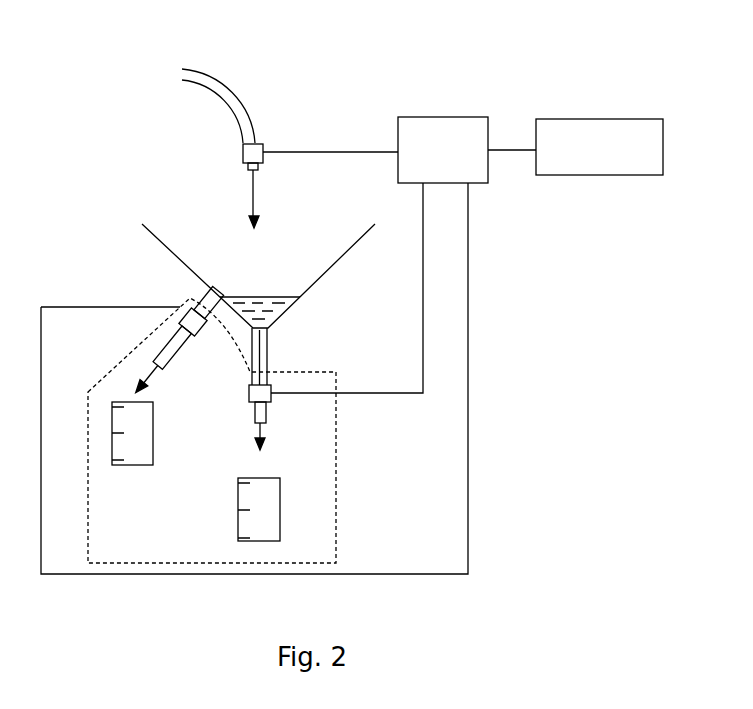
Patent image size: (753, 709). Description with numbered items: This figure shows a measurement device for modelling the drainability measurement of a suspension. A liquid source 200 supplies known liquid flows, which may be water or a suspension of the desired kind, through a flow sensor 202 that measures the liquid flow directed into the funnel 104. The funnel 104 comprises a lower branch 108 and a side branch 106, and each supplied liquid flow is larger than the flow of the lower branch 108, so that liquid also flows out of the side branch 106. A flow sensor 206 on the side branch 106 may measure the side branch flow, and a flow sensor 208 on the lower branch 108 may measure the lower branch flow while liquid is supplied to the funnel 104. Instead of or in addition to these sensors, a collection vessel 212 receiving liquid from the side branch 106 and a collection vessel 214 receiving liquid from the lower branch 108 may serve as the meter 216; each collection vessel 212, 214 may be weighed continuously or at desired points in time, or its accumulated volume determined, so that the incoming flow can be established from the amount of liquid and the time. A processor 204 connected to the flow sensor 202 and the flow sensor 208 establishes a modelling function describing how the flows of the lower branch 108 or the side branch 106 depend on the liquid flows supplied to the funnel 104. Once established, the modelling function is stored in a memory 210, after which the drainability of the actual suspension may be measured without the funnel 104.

The liquid source 200 is at (221, 80).
The flow sensor 202 is at (243, 153).
The processor 204 is at (431, 117).
The memory 210 is at (584, 119).
The funnel 104 is at (360, 242).
The side branch 106 is at (200, 297).
The lower branch 108 is at (267, 366).
The flow sensor 206 is at (180, 317).
The flow sensor 208 is at (249, 396).
The collection vessel 212 is at (153, 431).
The collection vessel 214 is at (280, 497).
The meter 216 is at (336, 444).